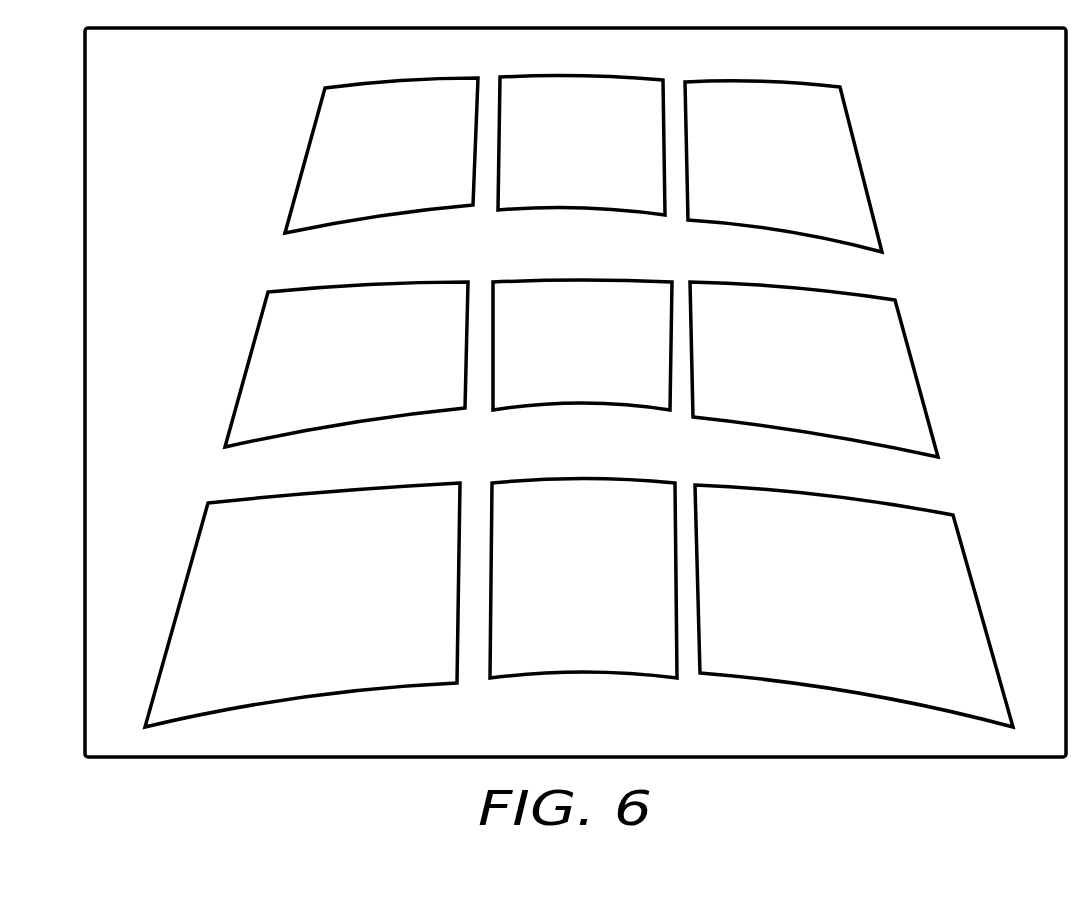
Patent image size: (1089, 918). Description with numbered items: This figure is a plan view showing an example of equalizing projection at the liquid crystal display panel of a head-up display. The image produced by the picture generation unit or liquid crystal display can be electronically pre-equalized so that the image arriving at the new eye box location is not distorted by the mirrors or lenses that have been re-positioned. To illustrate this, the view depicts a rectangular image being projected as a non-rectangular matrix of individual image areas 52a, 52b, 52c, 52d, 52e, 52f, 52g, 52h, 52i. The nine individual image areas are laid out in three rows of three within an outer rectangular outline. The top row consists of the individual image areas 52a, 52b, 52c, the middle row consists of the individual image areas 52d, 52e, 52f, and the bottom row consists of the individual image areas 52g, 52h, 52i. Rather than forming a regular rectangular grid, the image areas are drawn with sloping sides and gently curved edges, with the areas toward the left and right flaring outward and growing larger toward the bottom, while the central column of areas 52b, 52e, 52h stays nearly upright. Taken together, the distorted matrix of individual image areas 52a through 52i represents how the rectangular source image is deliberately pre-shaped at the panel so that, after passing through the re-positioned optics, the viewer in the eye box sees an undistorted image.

The individual image area 52a is at (381, 155).
The individual image area 52b is at (581, 145).
The individual image area 52c is at (783, 166).
The individual image area 52d is at (346, 364).
The individual image area 52e is at (582, 345).
The individual image area 52f is at (814, 369).
The individual image area 52g is at (302, 605).
The individual image area 52h is at (583, 579).
The individual image area 52i is at (854, 606).